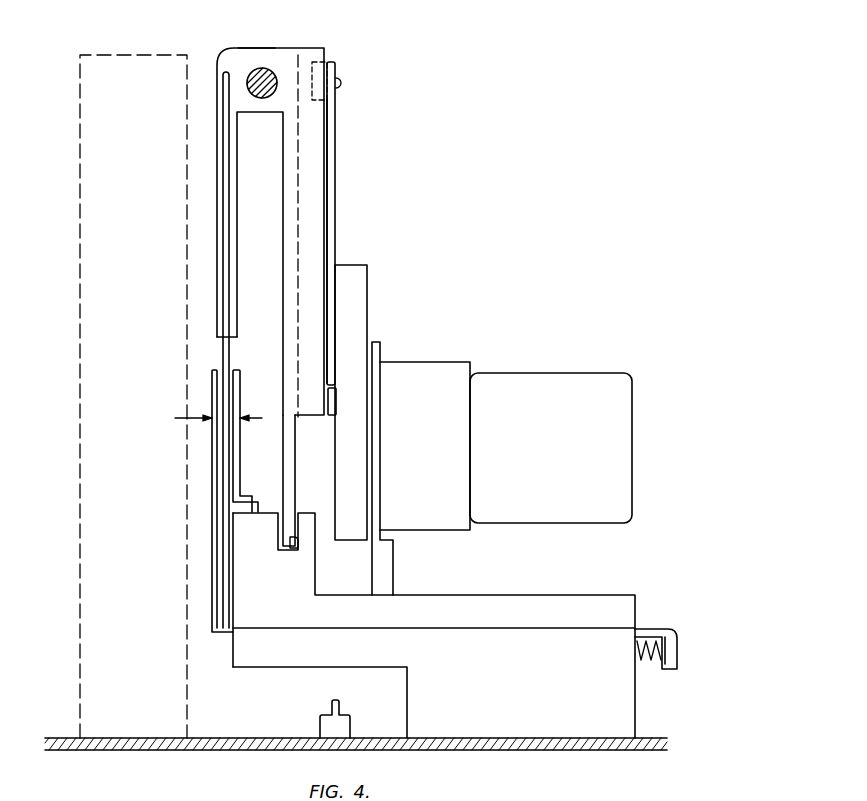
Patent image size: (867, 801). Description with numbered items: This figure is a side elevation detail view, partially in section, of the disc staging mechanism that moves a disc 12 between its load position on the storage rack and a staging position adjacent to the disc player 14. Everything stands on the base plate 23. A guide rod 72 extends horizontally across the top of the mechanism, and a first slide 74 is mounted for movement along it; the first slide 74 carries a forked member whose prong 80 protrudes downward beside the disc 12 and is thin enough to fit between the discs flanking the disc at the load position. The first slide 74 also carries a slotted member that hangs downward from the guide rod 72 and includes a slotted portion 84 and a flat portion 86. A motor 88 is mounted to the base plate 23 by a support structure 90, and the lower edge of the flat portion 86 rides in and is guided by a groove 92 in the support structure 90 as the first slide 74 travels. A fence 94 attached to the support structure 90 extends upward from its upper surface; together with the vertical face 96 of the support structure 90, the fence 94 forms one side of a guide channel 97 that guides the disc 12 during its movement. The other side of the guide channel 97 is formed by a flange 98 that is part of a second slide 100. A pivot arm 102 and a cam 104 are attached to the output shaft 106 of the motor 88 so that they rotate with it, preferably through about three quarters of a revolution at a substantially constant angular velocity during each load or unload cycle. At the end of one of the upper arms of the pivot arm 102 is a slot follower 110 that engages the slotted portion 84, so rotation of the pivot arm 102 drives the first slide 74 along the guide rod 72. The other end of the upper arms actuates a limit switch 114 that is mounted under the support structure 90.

The disc 12 is at (225, 240).
The disc player 14 is at (80, 137).
The base plate 23 is at (515, 749).
The guide rod 72 is at (265, 70).
The first slide 74 is at (255, 47).
The prong 80 is at (239, 300).
The slotted portion 84 is at (330, 238).
The flat portion 86 is at (280, 487).
The motor 88 is at (520, 373).
The support structure 90 is at (515, 597).
The groove 92 is at (291, 550).
The fence 94 is at (241, 398).
The vertical face 96 is at (233, 540).
The guide channel 97 is at (206, 418).
The flange 98 is at (212, 446).
The second slide 100 is at (655, 629).
The pivot arm 102 is at (337, 196).
The cam 104 is at (370, 302).
The output shaft 106 is at (330, 427).
The slot follower 110 is at (328, 62).
The limit switch 114 is at (320, 722).